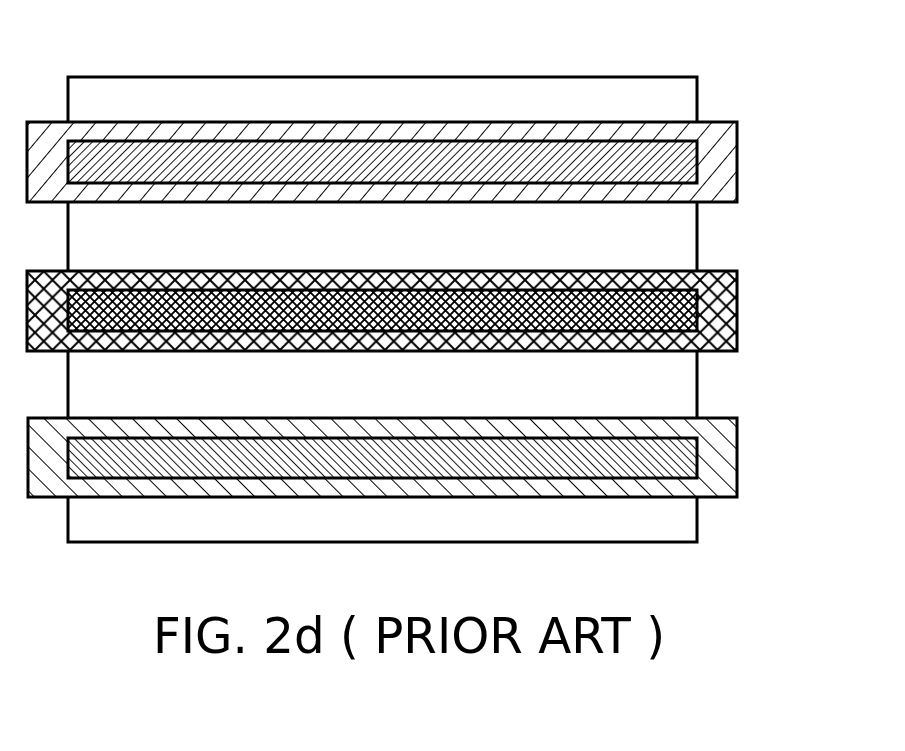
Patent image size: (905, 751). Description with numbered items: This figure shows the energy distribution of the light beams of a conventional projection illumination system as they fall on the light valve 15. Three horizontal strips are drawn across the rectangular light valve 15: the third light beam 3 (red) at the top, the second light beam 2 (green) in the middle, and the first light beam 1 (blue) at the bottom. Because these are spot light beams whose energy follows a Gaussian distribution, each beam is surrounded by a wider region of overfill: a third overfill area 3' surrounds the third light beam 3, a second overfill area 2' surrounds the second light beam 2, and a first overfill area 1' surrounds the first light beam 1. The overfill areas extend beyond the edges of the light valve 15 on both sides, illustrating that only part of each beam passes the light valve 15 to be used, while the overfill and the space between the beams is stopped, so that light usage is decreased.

The light valve 15 is at (648, 88).
The third overfill area 3' is at (415, 162).
The third light beam 3 is at (431, 163).
The second overfill area 2' is at (415, 310).
The second light beam 2 is at (431, 313).
The first overfill area 1' is at (415, 457).
The first light beam 1 is at (431, 461).